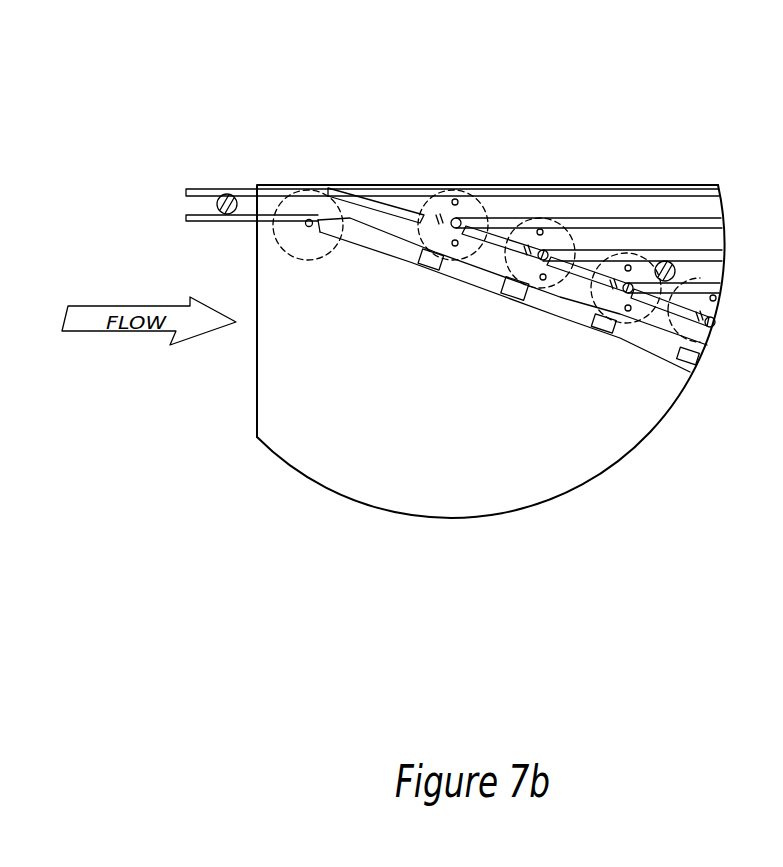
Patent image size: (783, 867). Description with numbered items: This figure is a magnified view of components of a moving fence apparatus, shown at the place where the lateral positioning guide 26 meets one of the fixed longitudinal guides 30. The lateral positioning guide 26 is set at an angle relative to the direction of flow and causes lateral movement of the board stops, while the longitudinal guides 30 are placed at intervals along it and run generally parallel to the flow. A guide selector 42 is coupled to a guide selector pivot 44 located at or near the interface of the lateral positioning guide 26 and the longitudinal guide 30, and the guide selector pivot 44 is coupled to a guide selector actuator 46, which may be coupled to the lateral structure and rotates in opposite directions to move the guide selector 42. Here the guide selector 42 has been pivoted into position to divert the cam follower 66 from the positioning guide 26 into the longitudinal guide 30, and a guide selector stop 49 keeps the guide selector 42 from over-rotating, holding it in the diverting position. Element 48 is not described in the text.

The lateral positioning guide 26 is at (370, 213).
The longitudinal guide 30 is at (498, 205).
The guide selector 42 is at (395, 207).
The guide selector pivot 44 is at (633, 298).
The guide selector actuator 46 is at (612, 267).
The link 48 is at (547, 230).
The guide selector stop 49 is at (513, 286).
The cam follower 66 is at (235, 195).